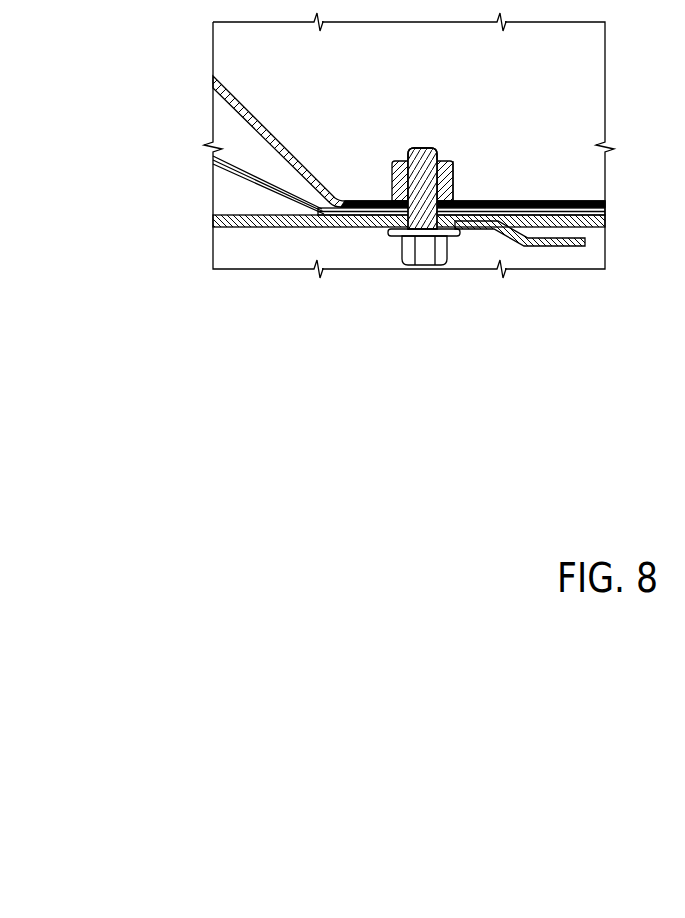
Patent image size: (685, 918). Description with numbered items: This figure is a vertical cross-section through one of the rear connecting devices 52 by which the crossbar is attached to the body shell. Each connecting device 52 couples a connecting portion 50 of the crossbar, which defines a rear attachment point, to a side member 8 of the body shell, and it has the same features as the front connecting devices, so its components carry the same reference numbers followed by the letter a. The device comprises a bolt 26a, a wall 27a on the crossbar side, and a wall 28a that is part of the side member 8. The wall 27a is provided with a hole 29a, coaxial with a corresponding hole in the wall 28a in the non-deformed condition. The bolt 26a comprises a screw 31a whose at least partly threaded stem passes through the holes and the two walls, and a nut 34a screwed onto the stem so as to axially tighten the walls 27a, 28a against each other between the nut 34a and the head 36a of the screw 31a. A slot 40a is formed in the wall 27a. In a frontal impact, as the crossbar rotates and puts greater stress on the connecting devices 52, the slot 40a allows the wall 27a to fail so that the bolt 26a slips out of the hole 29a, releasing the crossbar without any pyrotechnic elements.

The side member 8 is at (265, 119).
The bolt 26a is at (426, 146).
The wall 27a is at (355, 228).
The wall 28a is at (462, 201).
The hole 29a is at (408, 266).
The screw 31a is at (408, 142).
The nut 34a is at (445, 162).
The head 36a is at (443, 262).
The slot 40a is at (465, 231).
The connecting portion 50 is at (312, 228).
The connecting device 52 is at (455, 160).